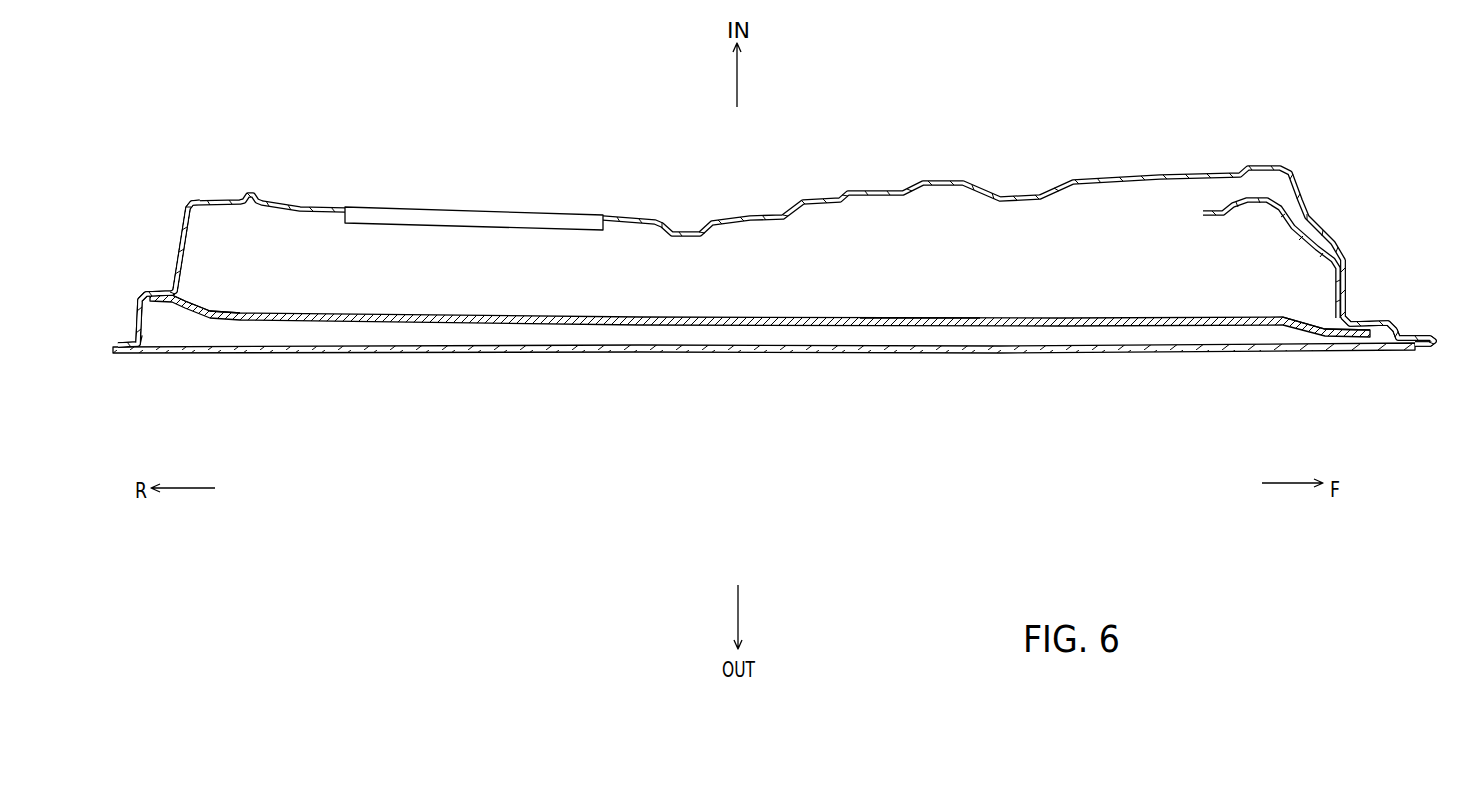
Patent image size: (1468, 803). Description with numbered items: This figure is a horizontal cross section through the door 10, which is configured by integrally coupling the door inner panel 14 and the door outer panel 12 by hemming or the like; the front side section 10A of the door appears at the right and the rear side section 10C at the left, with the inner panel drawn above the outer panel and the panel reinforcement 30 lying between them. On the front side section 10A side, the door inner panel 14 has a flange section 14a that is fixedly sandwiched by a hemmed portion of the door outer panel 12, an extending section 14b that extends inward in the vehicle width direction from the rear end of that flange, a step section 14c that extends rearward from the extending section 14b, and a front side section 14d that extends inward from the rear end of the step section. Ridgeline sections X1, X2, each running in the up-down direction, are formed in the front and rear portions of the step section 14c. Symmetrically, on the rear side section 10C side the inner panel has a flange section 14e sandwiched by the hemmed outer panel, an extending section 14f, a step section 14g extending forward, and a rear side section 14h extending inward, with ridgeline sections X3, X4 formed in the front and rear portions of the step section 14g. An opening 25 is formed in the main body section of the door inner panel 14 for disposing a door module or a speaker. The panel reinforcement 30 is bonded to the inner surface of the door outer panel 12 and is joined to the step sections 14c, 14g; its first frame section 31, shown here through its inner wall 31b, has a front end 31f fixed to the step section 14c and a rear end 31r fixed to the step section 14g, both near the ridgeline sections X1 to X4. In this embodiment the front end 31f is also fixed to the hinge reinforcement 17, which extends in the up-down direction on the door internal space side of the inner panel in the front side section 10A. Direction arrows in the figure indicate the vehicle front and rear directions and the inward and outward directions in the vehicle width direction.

The door 10 is at (960, 107).
The front side section 10A is at (1352, 246).
The rear side section 10C is at (152, 247).
The door outer panel 12 is at (1003, 355).
The door inner panel 14 is at (765, 274).
The flange section 14a is at (1414, 346).
The extending section 14b is at (1388, 340).
The step section 14c is at (1367, 323).
The front side section 14d is at (1336, 285).
The flange section 14e is at (120, 352).
The extending section 14f is at (141, 325).
The step section 14g is at (162, 292).
The rear side section 14h is at (188, 258).
The hinge reinforcement 17 is at (1290, 238).
The opening 25 is at (452, 210).
The panel reinforcement 30 is at (760, 324).
The first frame section 31 is at (760, 324).
The inner wall 31b is at (917, 318).
The front end 31f is at (1362, 334).
The rear end 31r is at (165, 300).
The ridgeline section X1 is at (1394, 330).
The ridgeline section X2 is at (1350, 324).
The ridgeline section X3 is at (171, 290).
The ridgeline section X4 is at (143, 293).